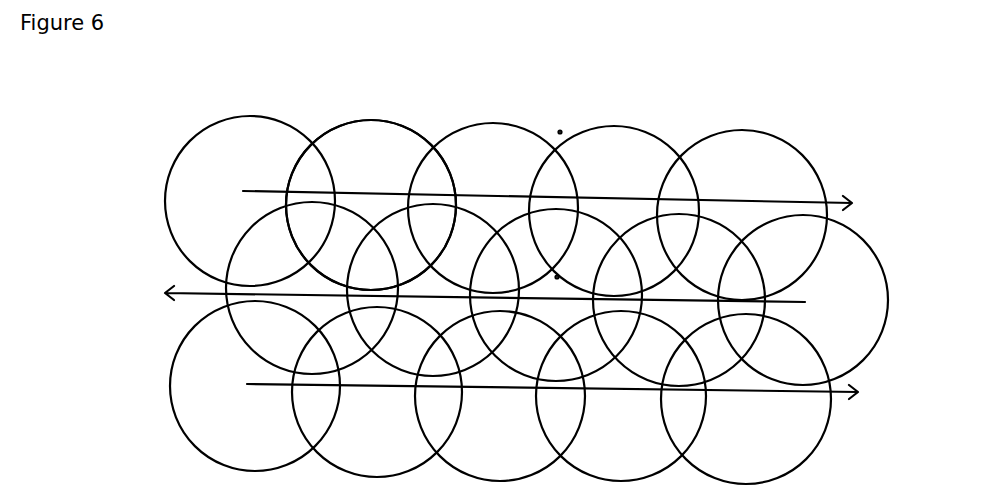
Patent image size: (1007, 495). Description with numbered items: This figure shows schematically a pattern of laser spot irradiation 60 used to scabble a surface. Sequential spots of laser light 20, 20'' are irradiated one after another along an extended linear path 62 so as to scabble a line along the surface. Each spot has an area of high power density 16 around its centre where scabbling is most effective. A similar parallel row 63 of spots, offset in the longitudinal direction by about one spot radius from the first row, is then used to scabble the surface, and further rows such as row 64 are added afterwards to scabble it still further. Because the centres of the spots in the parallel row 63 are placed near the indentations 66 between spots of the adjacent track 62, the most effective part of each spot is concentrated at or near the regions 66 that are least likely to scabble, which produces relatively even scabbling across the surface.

The area of high power density 16 is at (170, 234).
The spot of laser light 20 is at (220, 201).
The subsequent spot of laser light 20'' is at (371, 188).
The pattern of laser spot irradiation 60 is at (824, 126).
The extended linear path 62 is at (833, 200).
The parallel row of spots 63 is at (203, 295).
The further row 64 is at (808, 394).
The indentations 66 is at (557, 277).